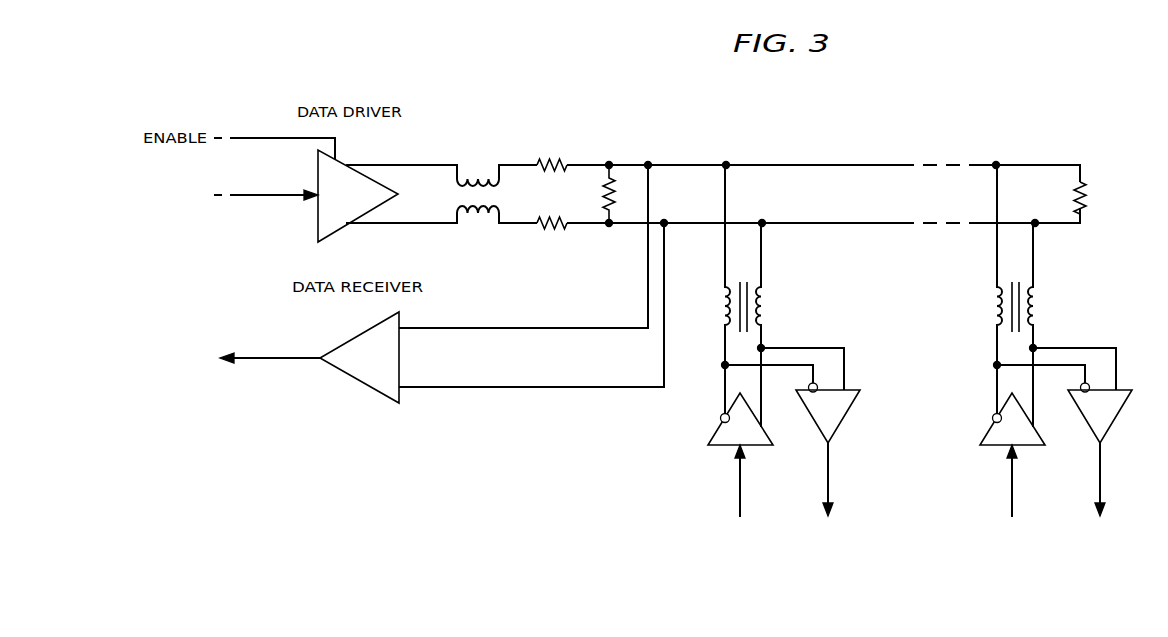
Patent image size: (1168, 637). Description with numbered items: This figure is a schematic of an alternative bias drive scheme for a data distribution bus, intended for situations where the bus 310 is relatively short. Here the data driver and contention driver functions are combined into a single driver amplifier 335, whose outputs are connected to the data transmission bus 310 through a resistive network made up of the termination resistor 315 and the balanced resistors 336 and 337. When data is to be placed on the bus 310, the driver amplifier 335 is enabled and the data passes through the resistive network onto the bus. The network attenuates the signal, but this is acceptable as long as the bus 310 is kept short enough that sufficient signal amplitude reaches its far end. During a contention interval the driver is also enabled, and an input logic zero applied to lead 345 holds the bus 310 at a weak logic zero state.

The data distribution bus 310 is at (910, 204).
The termination resistor 315 is at (594, 194).
The driver amplifier 335 is at (318, 174).
The balanced resistor 336 is at (552, 153).
The balanced resistor 337 is at (552, 211).
The lead 345 is at (273, 198).